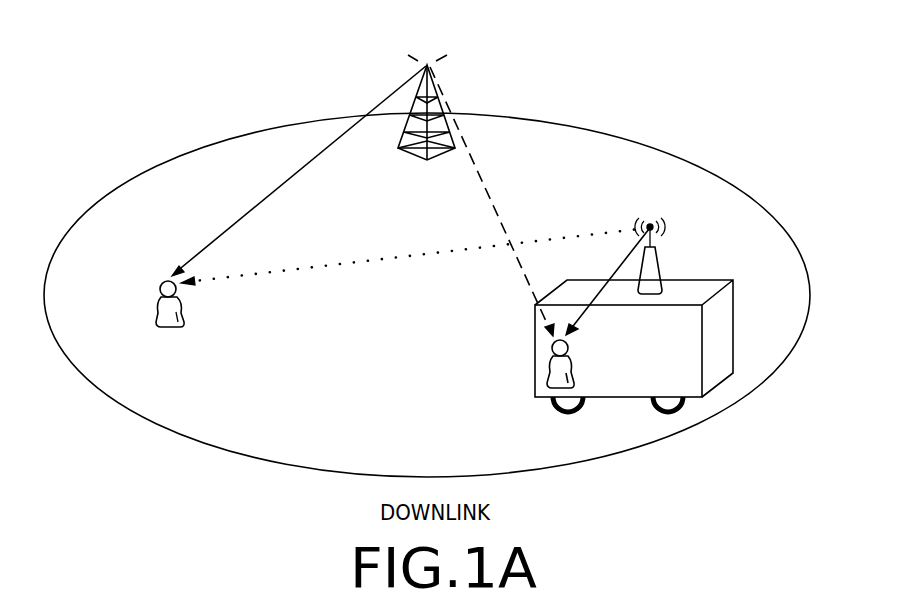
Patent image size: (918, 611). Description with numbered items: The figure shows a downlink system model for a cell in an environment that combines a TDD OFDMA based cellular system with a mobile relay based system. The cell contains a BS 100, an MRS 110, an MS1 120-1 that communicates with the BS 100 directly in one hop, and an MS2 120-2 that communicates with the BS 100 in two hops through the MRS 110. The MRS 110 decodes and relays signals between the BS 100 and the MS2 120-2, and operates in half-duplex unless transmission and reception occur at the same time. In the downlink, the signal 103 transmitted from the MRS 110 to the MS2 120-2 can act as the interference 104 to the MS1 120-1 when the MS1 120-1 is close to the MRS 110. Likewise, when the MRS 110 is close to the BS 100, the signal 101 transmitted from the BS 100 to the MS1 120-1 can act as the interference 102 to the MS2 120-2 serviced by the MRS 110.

The base station (BS) 100 is at (428, 58).
The signal transmitted from the BS to the MS1 101 is at (284, 184).
The interference to the MS2 102 is at (500, 211).
The signal transmitted from the MRS to the MS2 103 is at (629, 242).
The interference to the MS1 104 is at (375, 261).
The mobile relay station (MRS) 110 is at (716, 262).
The MS1 (priority terminal) 120-1 is at (336, 348).
The MS2 (second priority terminal) 120-2 is at (733, 325).